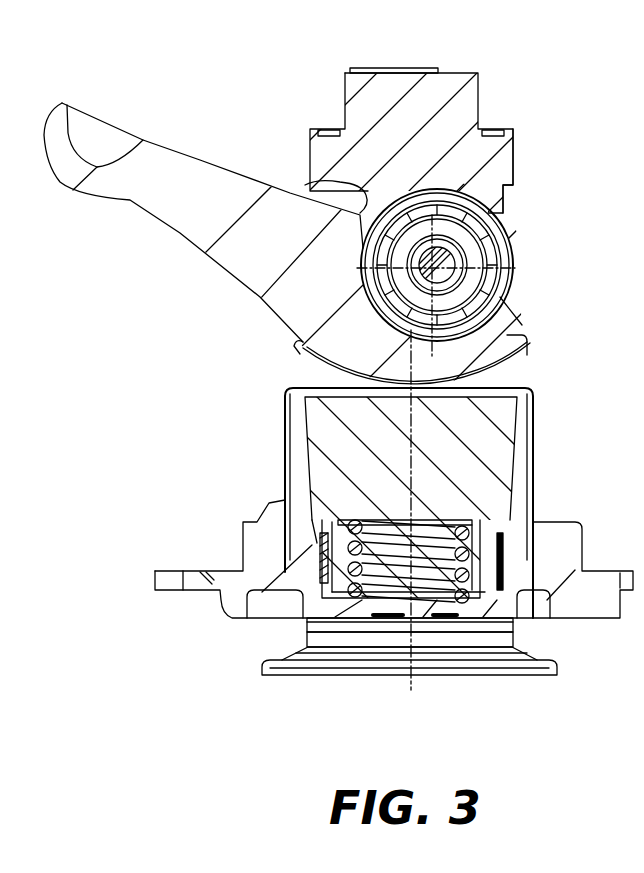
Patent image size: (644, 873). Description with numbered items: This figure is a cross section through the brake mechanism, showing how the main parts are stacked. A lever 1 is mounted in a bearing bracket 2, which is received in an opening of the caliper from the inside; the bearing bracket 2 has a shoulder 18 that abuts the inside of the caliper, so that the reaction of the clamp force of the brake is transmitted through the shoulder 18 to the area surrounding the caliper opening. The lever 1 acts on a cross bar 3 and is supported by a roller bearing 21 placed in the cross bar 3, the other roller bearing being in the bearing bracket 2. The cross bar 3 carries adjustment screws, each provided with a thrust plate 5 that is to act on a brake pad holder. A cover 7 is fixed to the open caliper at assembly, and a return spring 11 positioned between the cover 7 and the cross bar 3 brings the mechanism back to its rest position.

The lever 1 is at (188, 225).
The bearing bracket 2 is at (455, 95).
The shoulder 18 is at (513, 145).
The roller bearing 21 is at (517, 363).
The cross bar 3 is at (535, 445).
The cover 7 is at (230, 607).
The return spring 11 is at (428, 620).
The thrust plate 5 is at (507, 667).